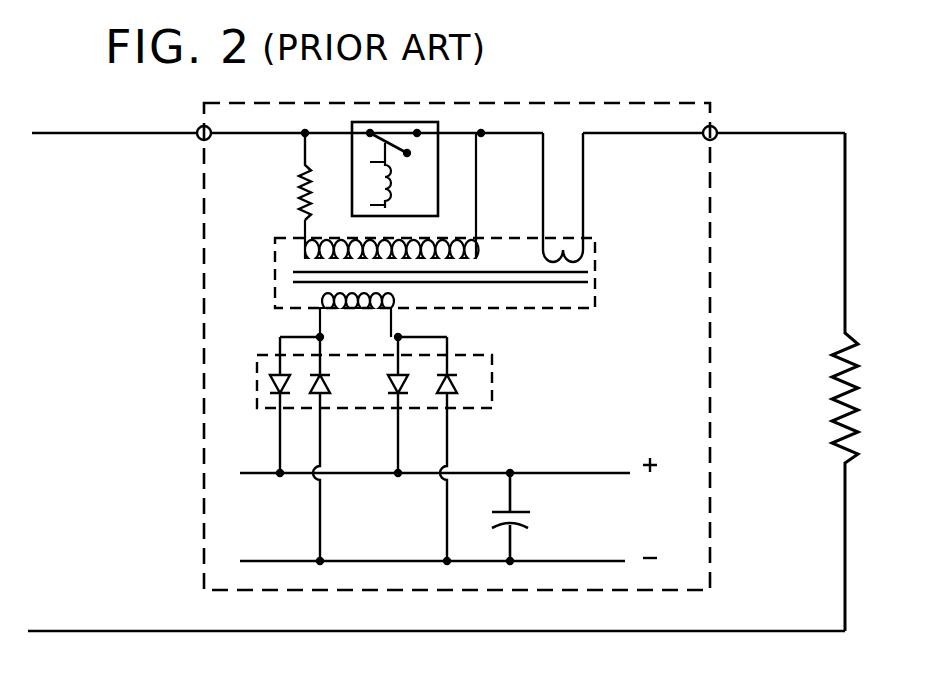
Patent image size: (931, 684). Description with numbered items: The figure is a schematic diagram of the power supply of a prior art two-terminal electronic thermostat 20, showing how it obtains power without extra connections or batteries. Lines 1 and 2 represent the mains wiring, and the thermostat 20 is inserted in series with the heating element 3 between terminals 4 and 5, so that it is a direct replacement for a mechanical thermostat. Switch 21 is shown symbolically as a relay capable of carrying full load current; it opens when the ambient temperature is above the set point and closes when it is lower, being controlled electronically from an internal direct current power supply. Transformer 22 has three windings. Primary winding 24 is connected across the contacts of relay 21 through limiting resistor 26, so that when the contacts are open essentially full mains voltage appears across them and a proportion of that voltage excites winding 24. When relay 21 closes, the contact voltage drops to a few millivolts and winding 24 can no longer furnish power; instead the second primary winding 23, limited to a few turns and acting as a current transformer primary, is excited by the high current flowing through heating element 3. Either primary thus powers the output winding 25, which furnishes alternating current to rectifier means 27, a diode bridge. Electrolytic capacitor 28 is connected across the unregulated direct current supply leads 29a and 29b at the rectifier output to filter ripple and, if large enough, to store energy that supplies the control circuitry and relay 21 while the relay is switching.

The mains wiring line 1 is at (88, 135).
The mains wiring line 2 is at (88, 629).
The heating element 3 is at (833, 385).
The terminal 4 is at (200, 141).
The terminal 5 is at (716, 139).
The thermostat 20 is at (203, 393).
The relay 21 is at (438, 203).
The transformer 22 is at (597, 278).
The second primary winding 23 is at (584, 242).
The primary winding 24 is at (465, 240).
The secondary winding 25 is at (399, 312).
The limiting resistor 26 is at (298, 205).
The rectifier means 27 is at (493, 381).
The capacitor 28 is at (520, 526).
The direct current supply lead 29a is at (567, 471).
The direct current supply lead 29b is at (385, 559).